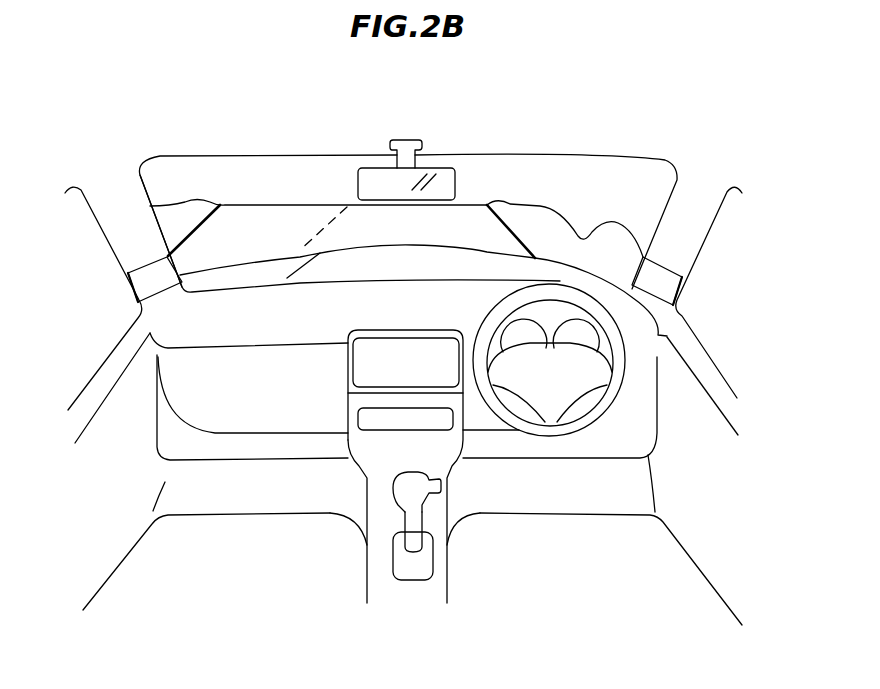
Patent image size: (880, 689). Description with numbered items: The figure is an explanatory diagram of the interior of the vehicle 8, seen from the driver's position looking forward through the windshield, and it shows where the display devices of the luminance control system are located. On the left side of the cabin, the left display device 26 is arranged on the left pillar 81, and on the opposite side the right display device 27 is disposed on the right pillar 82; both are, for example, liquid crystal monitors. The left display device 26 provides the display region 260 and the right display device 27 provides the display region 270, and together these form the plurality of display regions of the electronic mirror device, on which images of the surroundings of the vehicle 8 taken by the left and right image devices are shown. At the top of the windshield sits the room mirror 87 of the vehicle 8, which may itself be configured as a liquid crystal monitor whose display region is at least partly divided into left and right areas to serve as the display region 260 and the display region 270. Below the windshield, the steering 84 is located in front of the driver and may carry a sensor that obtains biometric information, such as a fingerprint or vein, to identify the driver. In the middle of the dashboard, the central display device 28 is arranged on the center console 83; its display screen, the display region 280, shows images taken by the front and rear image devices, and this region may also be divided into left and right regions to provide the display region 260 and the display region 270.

The vehicle 8 is at (737, 80).
The left pillar 81 is at (130, 243).
The right pillar 82 is at (677, 235).
The left display device 26 is at (147, 266).
The right display device 27 is at (663, 267).
The display region 260 is at (152, 285).
The display region 270 is at (662, 282).
The room mirror 87 is at (440, 188).
The steering 84 is at (615, 383).
The central display device 28 is at (445, 385).
The display region 280 is at (393, 367).
The center console 83 is at (433, 450).